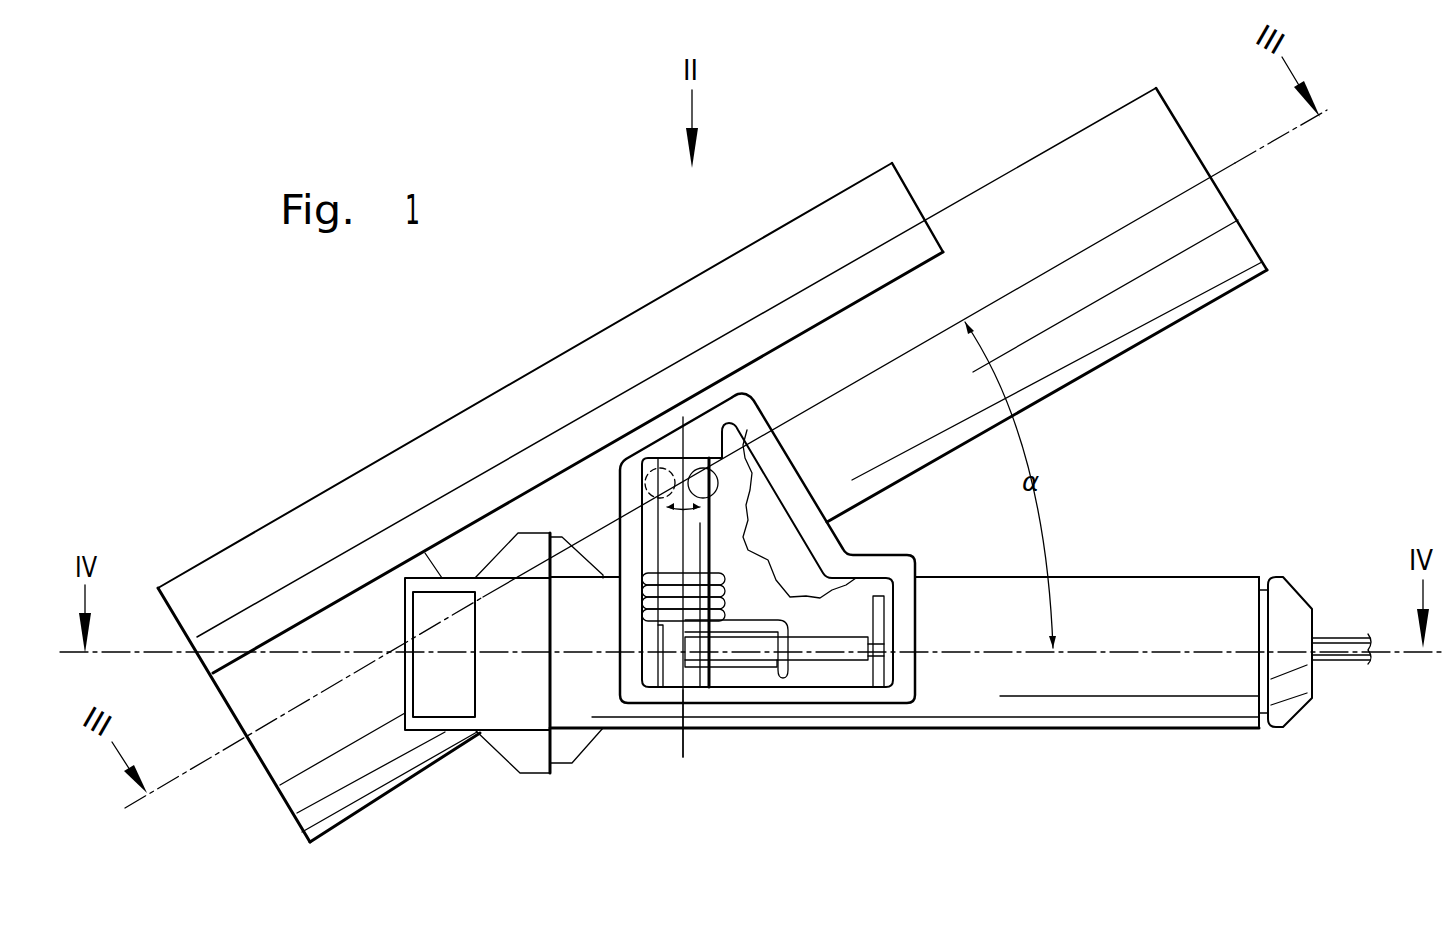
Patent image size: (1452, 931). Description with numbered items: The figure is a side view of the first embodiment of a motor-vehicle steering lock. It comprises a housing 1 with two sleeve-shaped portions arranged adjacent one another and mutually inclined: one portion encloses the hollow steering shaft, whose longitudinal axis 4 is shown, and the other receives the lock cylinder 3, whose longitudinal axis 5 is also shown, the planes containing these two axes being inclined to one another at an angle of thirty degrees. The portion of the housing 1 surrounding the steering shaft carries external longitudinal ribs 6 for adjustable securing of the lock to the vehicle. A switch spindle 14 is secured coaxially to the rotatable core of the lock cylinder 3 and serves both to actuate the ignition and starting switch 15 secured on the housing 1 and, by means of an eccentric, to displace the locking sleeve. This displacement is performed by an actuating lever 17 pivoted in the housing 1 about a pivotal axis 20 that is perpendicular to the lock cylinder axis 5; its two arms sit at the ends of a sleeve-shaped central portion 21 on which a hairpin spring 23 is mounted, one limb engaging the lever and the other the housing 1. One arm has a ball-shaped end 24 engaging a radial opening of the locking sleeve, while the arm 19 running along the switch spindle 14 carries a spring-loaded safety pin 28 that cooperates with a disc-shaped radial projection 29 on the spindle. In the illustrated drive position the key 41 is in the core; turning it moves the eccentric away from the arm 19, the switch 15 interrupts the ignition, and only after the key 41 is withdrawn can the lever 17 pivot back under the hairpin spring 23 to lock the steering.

The housing 1 is at (928, 452).
The lock cylinder 3 is at (1292, 599).
The longitudinal axis of the steering shaft 4 is at (1073, 258).
The longitudinal axis of the lock cylinder 5 is at (1153, 650).
The external longitudinal ribs 6 is at (483, 492).
The switch spindle 14 is at (650, 645).
The ignition and starting switch 15 is at (520, 697).
The actuating lever 17 is at (738, 472).
The arm 19 is at (732, 660).
The pivotal axis 20 is at (683, 747).
The sleeve-shaped central portion 21 is at (667, 528).
The hairpin spring 23 is at (655, 598).
The ball-shaped end 24 is at (718, 478).
The safety pin 28 is at (882, 650).
The radial projection 29 is at (878, 622).
The key 41 is at (1346, 657).